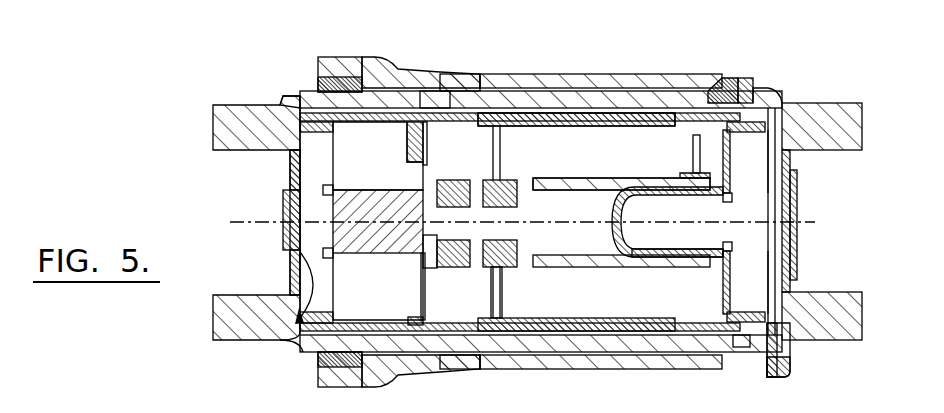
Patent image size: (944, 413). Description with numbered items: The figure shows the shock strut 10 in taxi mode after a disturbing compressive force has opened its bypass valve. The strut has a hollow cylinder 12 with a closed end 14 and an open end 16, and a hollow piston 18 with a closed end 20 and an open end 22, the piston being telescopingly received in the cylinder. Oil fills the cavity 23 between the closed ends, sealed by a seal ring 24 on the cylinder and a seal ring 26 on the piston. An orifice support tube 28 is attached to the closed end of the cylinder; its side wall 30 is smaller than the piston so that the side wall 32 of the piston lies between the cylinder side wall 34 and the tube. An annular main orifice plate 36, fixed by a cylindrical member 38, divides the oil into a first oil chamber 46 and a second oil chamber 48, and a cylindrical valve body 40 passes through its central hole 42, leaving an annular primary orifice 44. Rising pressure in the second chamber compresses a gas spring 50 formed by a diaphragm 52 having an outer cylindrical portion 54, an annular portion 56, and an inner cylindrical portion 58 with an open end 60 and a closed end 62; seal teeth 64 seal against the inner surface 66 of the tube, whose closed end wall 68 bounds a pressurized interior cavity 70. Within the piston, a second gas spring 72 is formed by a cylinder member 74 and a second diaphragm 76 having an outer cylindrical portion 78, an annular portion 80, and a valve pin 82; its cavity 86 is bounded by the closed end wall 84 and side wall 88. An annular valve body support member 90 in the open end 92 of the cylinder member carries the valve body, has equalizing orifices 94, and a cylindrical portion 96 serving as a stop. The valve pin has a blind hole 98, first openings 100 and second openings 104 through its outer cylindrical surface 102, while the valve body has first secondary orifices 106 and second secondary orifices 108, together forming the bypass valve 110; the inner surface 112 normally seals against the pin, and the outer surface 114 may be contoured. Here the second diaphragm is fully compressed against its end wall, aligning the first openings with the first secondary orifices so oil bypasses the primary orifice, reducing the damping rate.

The shock strut 10 is at (843, 80).
The hollow cylinder 12 is at (338, 62).
The closed end of cylinder 14 is at (781, 98).
The open end of cylinder 16 is at (304, 70).
The hollow piston 18 is at (233, 113).
The closed end of piston 20 is at (300, 96).
The open end of piston 22 is at (742, 88).
The cavity 23 is at (770, 87).
The seal ring 24 is at (372, 86).
The seal ring 26 is at (727, 86).
The orifice support tube 28 is at (768, 138).
The side wall of orifice support tube 30 is at (552, 114).
The side wall of piston 32 is at (462, 100).
The cylinder side wall 34 is at (490, 82).
The main orifice plate 36 is at (523, 180).
The cylindrical member 38 is at (480, 173).
The valve body 40 is at (598, 263).
The central hole 42 is at (498, 268).
The primary orifice 44 is at (478, 182).
The first oil chamber 46 is at (450, 86).
The second oil chamber 48 is at (697, 160).
The gas spring 50 is at (790, 336).
The diaphragm 52 is at (725, 292).
The outer cylindrical portion 54 is at (724, 309).
The annular portion 56 is at (733, 251).
The inner cylindrical portion 58 is at (683, 250).
The open end of inner cylindrical portion 60 is at (722, 203).
The closed end of inner cylindrical portion 62 is at (626, 198).
The seal teeth 64 is at (738, 347).
The inner surface of orifice support tube 66 is at (770, 370).
The closed end wall 68 is at (775, 178).
The interior cavity 70 is at (784, 250).
The second gas spring 72 is at (294, 344).
The cylinder member 74 is at (312, 348).
The second diaphragm 76 is at (335, 308).
The outer cylindrical portion 78 is at (300, 290).
The annular portion 80 is at (290, 256).
The valve pin 82 is at (360, 209).
The closed end wall 84 is at (290, 172).
The cavity 86 is at (283, 212).
The side wall of cylinder member 88 is at (290, 138).
The valve body support member 90 is at (427, 128).
The open end of cylinder member 92 is at (448, 100).
The equalizing orifices 94 is at (407, 154).
The cylindrical portion 96 is at (405, 130).
The blind hole 98 is at (470, 235).
The first openings 100 is at (473, 266).
The outer cylindrical surface 102 is at (497, 130).
The second openings 104 is at (478, 270).
The first secondary orifices 106 is at (518, 214).
The second secondary orifices 108 is at (547, 266).
The bypass valve 110 is at (455, 330).
The inner surface of valve body 112 is at (600, 196).
The outer surface of valve body 114 is at (490, 282).